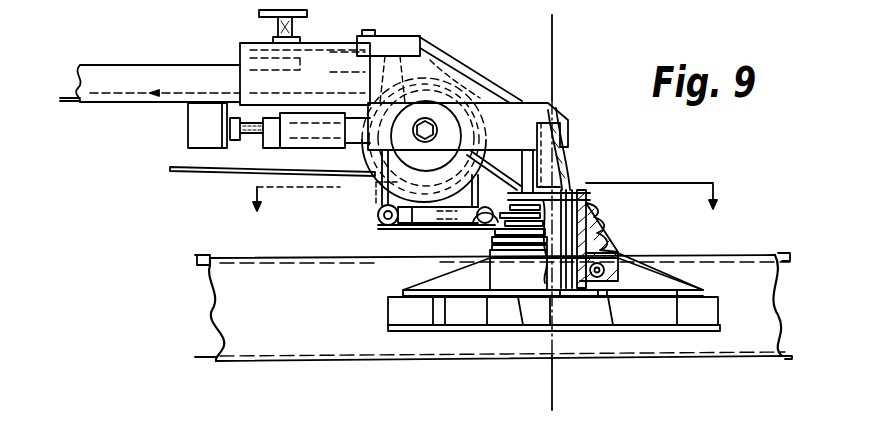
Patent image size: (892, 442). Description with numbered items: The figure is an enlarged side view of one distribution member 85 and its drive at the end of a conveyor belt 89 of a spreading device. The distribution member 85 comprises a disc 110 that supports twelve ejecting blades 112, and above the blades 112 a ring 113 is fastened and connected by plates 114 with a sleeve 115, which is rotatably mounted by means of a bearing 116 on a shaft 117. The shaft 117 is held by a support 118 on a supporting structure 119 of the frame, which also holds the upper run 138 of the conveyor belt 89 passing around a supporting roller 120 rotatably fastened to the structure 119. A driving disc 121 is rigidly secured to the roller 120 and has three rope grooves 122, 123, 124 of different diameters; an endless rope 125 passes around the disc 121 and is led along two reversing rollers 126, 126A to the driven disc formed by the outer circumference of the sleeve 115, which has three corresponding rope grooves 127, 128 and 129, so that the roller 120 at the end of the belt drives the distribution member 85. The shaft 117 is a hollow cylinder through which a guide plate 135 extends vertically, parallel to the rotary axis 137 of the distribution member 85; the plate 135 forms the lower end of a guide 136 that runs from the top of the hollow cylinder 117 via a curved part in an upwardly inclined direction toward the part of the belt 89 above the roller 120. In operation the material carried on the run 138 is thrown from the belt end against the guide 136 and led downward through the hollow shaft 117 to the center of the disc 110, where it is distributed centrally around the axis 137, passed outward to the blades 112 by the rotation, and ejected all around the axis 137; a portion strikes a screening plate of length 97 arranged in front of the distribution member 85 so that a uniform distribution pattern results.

The distribution member 85 is at (389, 311).
The conveyor belt 89 is at (392, 92).
The length of deflector means 97 is at (313, 347).
The disc 110 is at (405, 331).
The ejecting blades 112 is at (512, 327).
The ring 113 is at (706, 290).
The pedestal 114 is at (422, 292).
The sleeve 115 is at (686, 253).
The bearing 116 is at (585, 311).
The shaft 117 is at (583, 190).
The support 118 is at (564, 111).
The supporting structure 119 is at (132, 52).
The supporting roller 120 is at (459, 87).
The driving disc 121 is at (463, 82).
The rope groove 122 is at (365, 155).
The rope groove 123 is at (372, 190).
The rope groove 124 is at (378, 197).
The endless rope 125 is at (368, 226).
The reversing roller 126 is at (379, 224).
The reversing roller 126A is at (488, 230).
The rope groove 127 is at (595, 211).
The rope groove 128 is at (607, 229).
The rope groove 129 is at (618, 250).
The guide plate 135 is at (562, 156).
The guide 136 is at (507, 108).
The rotary axis 137 is at (552, 383).
The upper run 138 is at (150, 88).